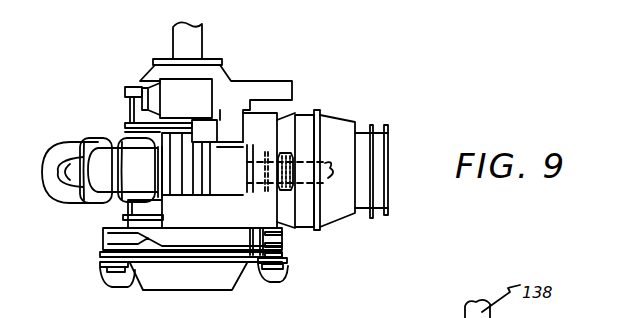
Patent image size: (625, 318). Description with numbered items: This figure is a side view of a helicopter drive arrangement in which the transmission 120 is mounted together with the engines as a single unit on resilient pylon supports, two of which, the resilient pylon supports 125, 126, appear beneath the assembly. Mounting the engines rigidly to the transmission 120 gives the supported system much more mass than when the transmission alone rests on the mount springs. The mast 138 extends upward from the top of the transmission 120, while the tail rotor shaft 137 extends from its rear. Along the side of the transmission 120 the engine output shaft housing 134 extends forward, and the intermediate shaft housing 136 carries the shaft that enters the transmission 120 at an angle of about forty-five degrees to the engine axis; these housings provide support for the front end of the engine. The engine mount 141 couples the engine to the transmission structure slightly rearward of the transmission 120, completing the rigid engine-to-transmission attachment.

The transmission 120 is at (200, 212).
The resilient pylon support 125 is at (108, 266).
The resilient pylon support 126 is at (288, 266).
The engine output shaft housing 134 is at (80, 146).
The intermediate shaft housing 136 is at (117, 137).
The tail rotor shaft 137 is at (328, 162).
The mast 138 is at (193, 40).
The engine mount 141 is at (267, 242).